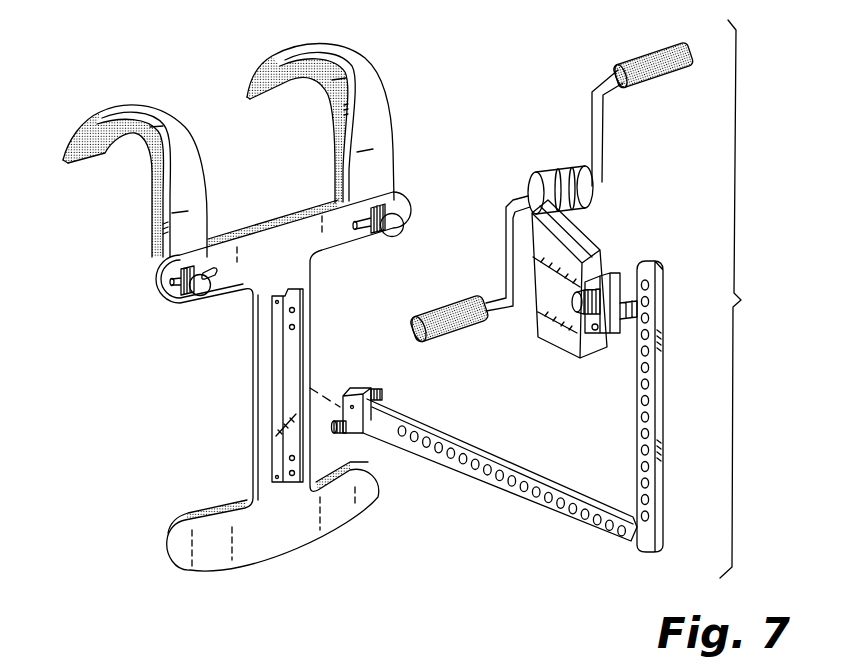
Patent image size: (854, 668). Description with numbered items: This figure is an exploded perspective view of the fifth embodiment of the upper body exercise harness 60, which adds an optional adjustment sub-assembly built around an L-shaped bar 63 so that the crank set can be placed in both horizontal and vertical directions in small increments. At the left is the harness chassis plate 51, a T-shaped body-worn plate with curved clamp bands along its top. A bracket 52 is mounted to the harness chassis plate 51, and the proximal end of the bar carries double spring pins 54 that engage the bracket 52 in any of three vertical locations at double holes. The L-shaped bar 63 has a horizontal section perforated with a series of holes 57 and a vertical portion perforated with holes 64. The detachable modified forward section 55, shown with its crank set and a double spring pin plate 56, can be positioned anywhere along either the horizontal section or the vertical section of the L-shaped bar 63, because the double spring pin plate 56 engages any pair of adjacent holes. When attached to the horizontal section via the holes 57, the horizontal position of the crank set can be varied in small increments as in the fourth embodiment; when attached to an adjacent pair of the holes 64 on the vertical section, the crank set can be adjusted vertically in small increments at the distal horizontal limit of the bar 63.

The harness chassis plate 51 is at (285, 540).
The bracket 52 is at (290, 350).
The double spring pins 54 is at (346, 383).
The forward section 55 is at (550, 308).
The double spring pin plate 56 is at (627, 275).
The holes 57 is at (462, 460).
The upper body exercise harness 60 is at (464, 106).
The L-shaped bar 63 is at (614, 406).
The holes 64 is at (643, 389).